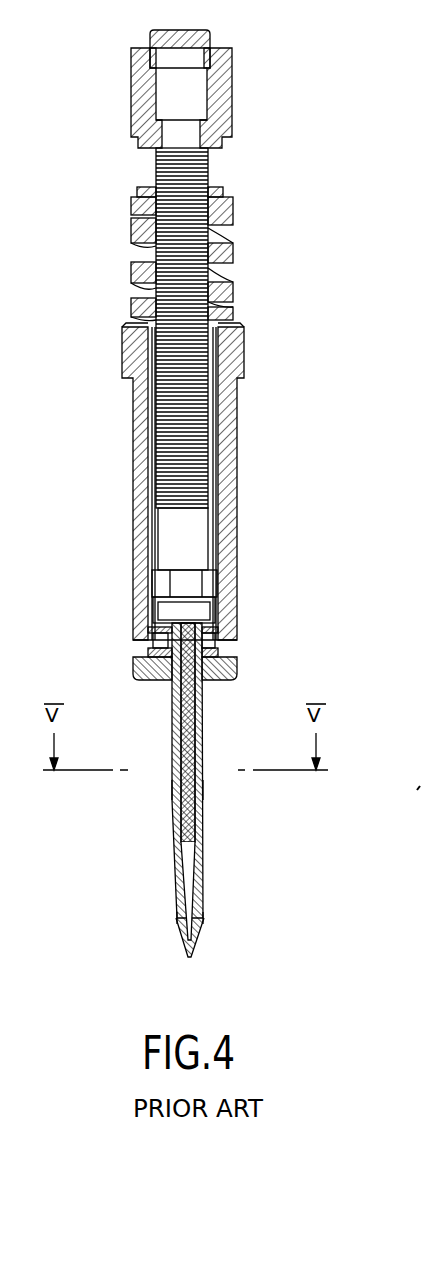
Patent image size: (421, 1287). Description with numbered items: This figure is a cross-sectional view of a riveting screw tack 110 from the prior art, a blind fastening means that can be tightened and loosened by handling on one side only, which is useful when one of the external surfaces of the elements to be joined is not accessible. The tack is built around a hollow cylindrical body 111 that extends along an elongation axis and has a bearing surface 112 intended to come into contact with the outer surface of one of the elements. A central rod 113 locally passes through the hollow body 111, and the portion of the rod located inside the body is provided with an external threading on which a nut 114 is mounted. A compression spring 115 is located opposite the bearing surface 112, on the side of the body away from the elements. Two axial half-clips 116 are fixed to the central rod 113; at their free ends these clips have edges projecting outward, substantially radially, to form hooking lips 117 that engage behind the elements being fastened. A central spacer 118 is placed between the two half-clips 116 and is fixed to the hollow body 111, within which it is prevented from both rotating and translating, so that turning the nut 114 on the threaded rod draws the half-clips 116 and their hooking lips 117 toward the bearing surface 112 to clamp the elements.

The riveting screw tack 110 is at (258, 247).
The hollow cylindrical body 111 is at (138, 425).
The bearing surface 112 is at (150, 681).
The central rod 113 is at (197, 541).
The nut 114 is at (130, 105).
The compression spring 115 is at (135, 228).
The axial half-clips 116 is at (173, 790).
The hooking lips 117 is at (177, 917).
The central spacer 118 is at (203, 755).